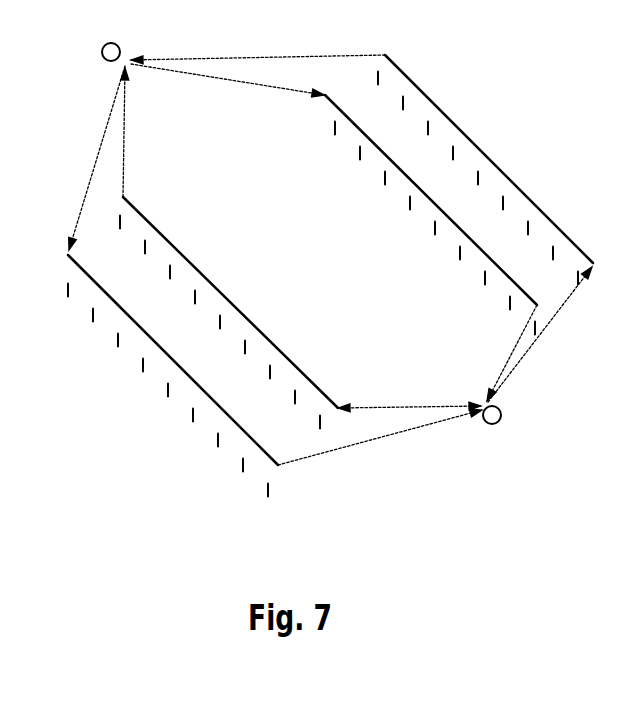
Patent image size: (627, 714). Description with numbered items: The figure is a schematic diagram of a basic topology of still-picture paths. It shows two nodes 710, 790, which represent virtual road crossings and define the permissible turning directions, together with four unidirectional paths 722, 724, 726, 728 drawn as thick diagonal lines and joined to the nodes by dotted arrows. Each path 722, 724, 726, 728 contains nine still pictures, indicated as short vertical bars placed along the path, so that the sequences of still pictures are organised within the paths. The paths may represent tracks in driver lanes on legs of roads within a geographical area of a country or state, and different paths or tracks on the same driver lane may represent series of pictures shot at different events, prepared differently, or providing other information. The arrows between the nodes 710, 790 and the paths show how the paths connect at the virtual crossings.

The node 710 is at (102, 51).
The unidirectional path 722 is at (175, 366).
The unidirectional path 724 is at (163, 238).
The unidirectional path 726 is at (462, 232).
The unidirectional path 728 is at (477, 147).
The node 790 is at (502, 415).